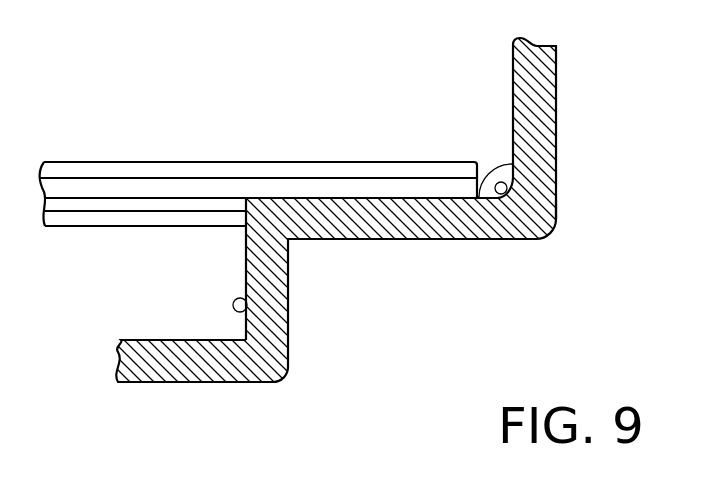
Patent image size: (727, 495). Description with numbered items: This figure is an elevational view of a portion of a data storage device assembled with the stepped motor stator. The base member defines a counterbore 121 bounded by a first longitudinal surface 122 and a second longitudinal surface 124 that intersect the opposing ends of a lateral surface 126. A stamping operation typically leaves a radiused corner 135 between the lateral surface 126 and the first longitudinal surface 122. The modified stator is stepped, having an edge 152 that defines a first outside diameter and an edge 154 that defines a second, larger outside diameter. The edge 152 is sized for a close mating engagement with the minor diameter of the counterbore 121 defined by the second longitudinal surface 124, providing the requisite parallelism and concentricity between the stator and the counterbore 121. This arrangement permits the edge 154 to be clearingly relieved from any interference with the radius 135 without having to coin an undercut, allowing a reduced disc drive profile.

The counterbore 121 is at (292, 82).
The first longitudinal surface 122 is at (513, 85).
The second longitudinal surface 124 is at (247, 313).
The lateral surface 126 is at (557, 195).
The radiused corner 135 is at (492, 198).
The edge 152 is at (247, 262).
The edge 154 is at (489, 165).